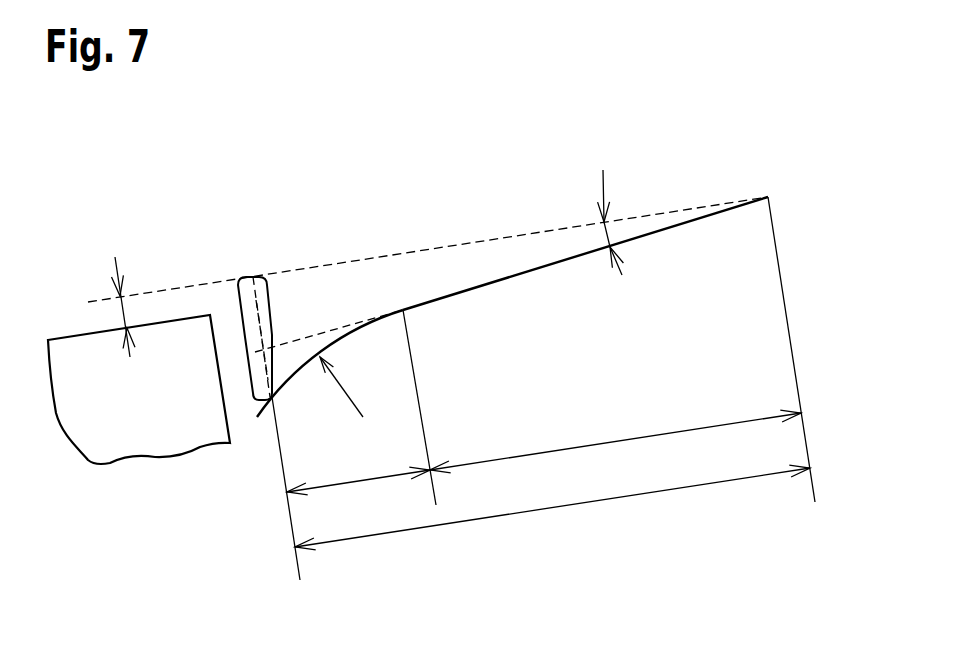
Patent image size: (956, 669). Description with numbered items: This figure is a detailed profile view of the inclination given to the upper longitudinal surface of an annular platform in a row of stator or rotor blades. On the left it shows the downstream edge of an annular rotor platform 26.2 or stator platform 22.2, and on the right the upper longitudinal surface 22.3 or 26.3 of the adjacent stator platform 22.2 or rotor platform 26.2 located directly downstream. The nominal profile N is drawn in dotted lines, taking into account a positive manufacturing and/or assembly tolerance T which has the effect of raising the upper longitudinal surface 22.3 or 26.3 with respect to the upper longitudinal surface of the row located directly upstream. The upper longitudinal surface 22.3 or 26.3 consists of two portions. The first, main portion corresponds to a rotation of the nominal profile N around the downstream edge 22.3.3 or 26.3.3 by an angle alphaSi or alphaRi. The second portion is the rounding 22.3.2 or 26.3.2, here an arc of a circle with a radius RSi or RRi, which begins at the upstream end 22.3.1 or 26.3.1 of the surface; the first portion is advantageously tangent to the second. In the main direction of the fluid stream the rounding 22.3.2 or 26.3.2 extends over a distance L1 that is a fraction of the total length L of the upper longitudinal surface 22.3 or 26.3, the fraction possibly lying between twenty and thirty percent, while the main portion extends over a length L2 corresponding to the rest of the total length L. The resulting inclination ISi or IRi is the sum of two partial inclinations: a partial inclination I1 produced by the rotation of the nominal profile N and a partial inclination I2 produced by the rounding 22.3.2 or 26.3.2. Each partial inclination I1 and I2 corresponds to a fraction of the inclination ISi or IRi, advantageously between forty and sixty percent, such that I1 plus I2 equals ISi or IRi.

The stator platform 22.2 is at (132, 434).
The rotor platform 26.2 is at (143, 388).
The upper longitudinal surface 22.3 is at (512, 247).
The upper longitudinal surface 26.3 is at (512, 247).
The upstream edge of upper longitudinal surface 22.3.1 is at (234, 508).
The upstream edge of upper longitudinal surface 26.3.1 is at (270, 397).
The rounding 22.3.2 is at (330, 247).
The rounding 26.3.2 is at (330, 247).
The downstream edge 22.3.3 is at (772, 263).
The downstream edge 26.3.3 is at (770, 197).
The nominal profile N is at (435, 247).
The manufacturing and/or assembly tolerance T is at (124, 317).
The inclination ISi is at (218, 297).
The inclination IRi is at (244, 340).
The partial inclination I1 is at (268, 345).
The partial inclination I2 is at (306, 342).
The rotation angle alphaSi is at (590, 247).
The rotation angle alphaRi is at (607, 233).
The radius of rounding RSi is at (363, 490).
The radius of rounding RRi is at (349, 399).
The total length L is at (552, 507).
The rounding length L1 is at (615, 441).
The main portion length L2 is at (361, 407).